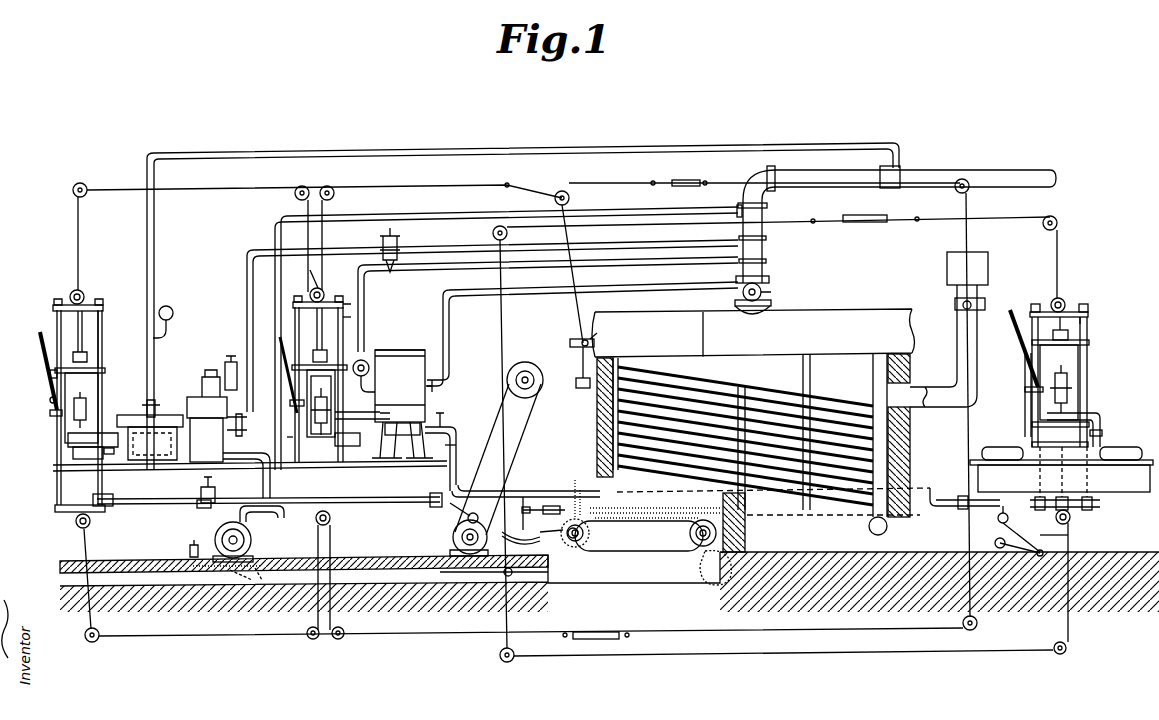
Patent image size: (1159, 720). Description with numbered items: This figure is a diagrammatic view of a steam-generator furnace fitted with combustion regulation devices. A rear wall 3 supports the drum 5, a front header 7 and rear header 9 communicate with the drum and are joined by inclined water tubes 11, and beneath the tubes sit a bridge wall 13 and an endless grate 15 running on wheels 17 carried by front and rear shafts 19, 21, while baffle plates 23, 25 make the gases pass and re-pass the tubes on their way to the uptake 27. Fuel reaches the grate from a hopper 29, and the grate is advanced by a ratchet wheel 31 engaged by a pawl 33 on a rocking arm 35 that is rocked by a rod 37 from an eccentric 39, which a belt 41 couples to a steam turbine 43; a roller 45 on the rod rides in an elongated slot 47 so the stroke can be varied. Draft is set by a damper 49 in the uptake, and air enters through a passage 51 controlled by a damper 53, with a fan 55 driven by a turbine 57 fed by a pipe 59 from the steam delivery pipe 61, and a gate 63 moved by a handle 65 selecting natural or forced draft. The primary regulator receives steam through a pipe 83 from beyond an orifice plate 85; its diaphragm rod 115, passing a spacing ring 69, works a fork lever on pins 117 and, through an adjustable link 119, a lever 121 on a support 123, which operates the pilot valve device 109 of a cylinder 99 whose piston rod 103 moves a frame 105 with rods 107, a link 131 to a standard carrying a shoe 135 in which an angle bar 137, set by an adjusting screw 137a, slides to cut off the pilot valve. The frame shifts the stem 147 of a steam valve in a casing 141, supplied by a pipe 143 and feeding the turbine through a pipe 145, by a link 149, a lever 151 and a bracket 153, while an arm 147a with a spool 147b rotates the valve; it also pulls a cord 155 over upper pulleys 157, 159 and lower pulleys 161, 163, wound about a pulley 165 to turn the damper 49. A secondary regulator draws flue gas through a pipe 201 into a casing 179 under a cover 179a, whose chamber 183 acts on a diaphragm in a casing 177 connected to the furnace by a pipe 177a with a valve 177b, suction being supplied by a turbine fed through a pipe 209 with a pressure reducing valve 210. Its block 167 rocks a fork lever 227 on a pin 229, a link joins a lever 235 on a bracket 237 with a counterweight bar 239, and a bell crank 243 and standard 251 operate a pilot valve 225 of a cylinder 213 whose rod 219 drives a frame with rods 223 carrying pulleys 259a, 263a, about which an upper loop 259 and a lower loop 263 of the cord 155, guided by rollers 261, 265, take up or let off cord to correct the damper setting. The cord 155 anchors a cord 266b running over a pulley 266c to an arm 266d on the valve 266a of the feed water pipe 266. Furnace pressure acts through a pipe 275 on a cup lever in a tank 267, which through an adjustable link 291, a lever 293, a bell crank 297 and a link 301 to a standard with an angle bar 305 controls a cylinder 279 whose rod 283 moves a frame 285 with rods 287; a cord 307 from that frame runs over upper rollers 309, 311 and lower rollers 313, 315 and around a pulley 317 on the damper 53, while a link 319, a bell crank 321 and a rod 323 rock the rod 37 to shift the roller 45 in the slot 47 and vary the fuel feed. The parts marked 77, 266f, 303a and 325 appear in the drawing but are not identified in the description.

The rear wall 3 is at (912, 424).
The drum 5 is at (863, 312).
The front header 7 is at (598, 431).
The rear header 9 is at (885, 446).
The inclined water tubes 11 is at (697, 403).
The bridge wall 13 is at (742, 530).
The endless grate 15 is at (619, 555).
The wheels 17 is at (697, 552).
The front shaft 19 is at (589, 535).
The rear shaft 21 is at (690, 533).
The baffle plate 23 is at (745, 386).
The baffle plate 25 is at (810, 391).
The uptake 27 is at (978, 342).
The hopper 29 is at (573, 483).
The ratchet wheel 31 is at (582, 552).
The pawl 33 is at (540, 545).
The rocking arm 35 is at (568, 548).
The eccentric rod 37 is at (529, 447).
The eccentric 39 is at (544, 380).
The belt 41 is at (502, 455).
The steam turbine 43 is at (452, 538).
The roller 45 is at (522, 524).
The elongated slot 47 is at (477, 517).
The damper 49 is at (977, 301).
The air passage 51 is at (435, 577).
The damper 53 is at (512, 573).
The fan 55 is at (255, 540).
The steam turbine 57 is at (255, 553).
The pipe 59 is at (387, 215).
The steam delivery pipe 61 is at (743, 251).
The gate 63 is at (235, 573).
The handle 65 is at (192, 547).
The spacing ring 69 is at (147, 417).
The tank 77 is at (172, 445).
The pipe 83 is at (561, 149).
The orifice plate 85 is at (902, 170).
The cylinder 99 is at (88, 382).
The piston rod 103 is at (85, 340).
The frame 105 is at (102, 318).
The rods 107 is at (55, 320).
The pilot valve device 109 is at (86, 407).
The rod 115 is at (153, 417).
The pins 117 is at (138, 433).
The adjustable link 119 is at (68, 440).
The lever 121 is at (87, 454).
The support 123 is at (112, 454).
The link 131 is at (56, 416).
The shoe 135 is at (50, 373).
The angle bar 137 is at (42, 337).
The adjusting screw 137a is at (50, 401).
The valve casing 141 is at (227, 445).
The pipe 143 is at (247, 311).
The pipe 145 is at (385, 487).
The valve stem 147 is at (205, 483).
The arm 147a is at (213, 372).
The spool 147b is at (238, 375).
The link 149 is at (197, 504).
The lever 151 is at (130, 482).
The bracket 153 is at (260, 507).
The cord 155 is at (78, 241).
The upper pulley 157 is at (87, 196).
The upper pulley 159 is at (970, 181).
The lower pulley 161 is at (971, 631).
The lower pulley 163 is at (92, 643).
The pulley 165 is at (955, 304).
The block 167 is at (403, 431).
The casing 177 is at (422, 433).
The pipe 177a is at (458, 443).
The valve 177b is at (451, 425).
The casing 179 is at (428, 365).
The cover 179a is at (397, 349).
The chamber 183 is at (572, 284).
The pipe 201 is at (438, 396).
The pipe 209 is at (408, 271).
The pressure reducing valve 210 is at (397, 240).
The cylinder 213 is at (335, 402).
The rod 219 is at (247, 423).
The rods 223 is at (351, 317).
The pilot valve 225 is at (322, 397).
The fork lever 227 is at (374, 407).
The pin 229 is at (380, 414).
The lever 235 is at (332, 456).
The bracket 237 is at (352, 448).
The bar 239 is at (380, 419).
The bell crank 243 is at (287, 437).
The standard 251 is at (290, 400).
The upper loop 259 is at (318, 271).
The pulley 259a is at (312, 292).
The upper rollers 261 is at (308, 190).
The loop 263 is at (331, 579).
The pulley 263a is at (331, 519).
The rollers 265 is at (313, 640).
The feed water pipe 266 is at (567, 344).
The valve 266a is at (567, 364).
The cord 266b is at (570, 211).
The pulley 266c is at (563, 191).
The arm 266d is at (582, 338).
The weight 266f is at (575, 393).
The tank 267 is at (1103, 487).
The pipe 275 is at (685, 494).
The cylinder 279 is at (1080, 358).
The rod 283 is at (1088, 324).
The frame 285 is at (1089, 338).
The rods 287 is at (1033, 328).
The adjustable link 291 is at (1102, 436).
The lever 293 is at (1078, 412).
The bell crank 297 is at (1028, 410).
The link 301 is at (1026, 397).
The lever 303a is at (1027, 390).
The angle bar 305 is at (1022, 317).
The cord 307 is at (1060, 264).
The upper roller 309 is at (1058, 223).
The upper roller 311 is at (508, 233).
The lower roller 313 is at (1056, 645).
The lower roller 315 is at (509, 662).
The pulley 317 is at (503, 573).
The link 319 is at (1068, 535).
The bell crank 321 is at (1017, 548).
The rod 323 is at (800, 518).
The fitting 325 is at (560, 490).